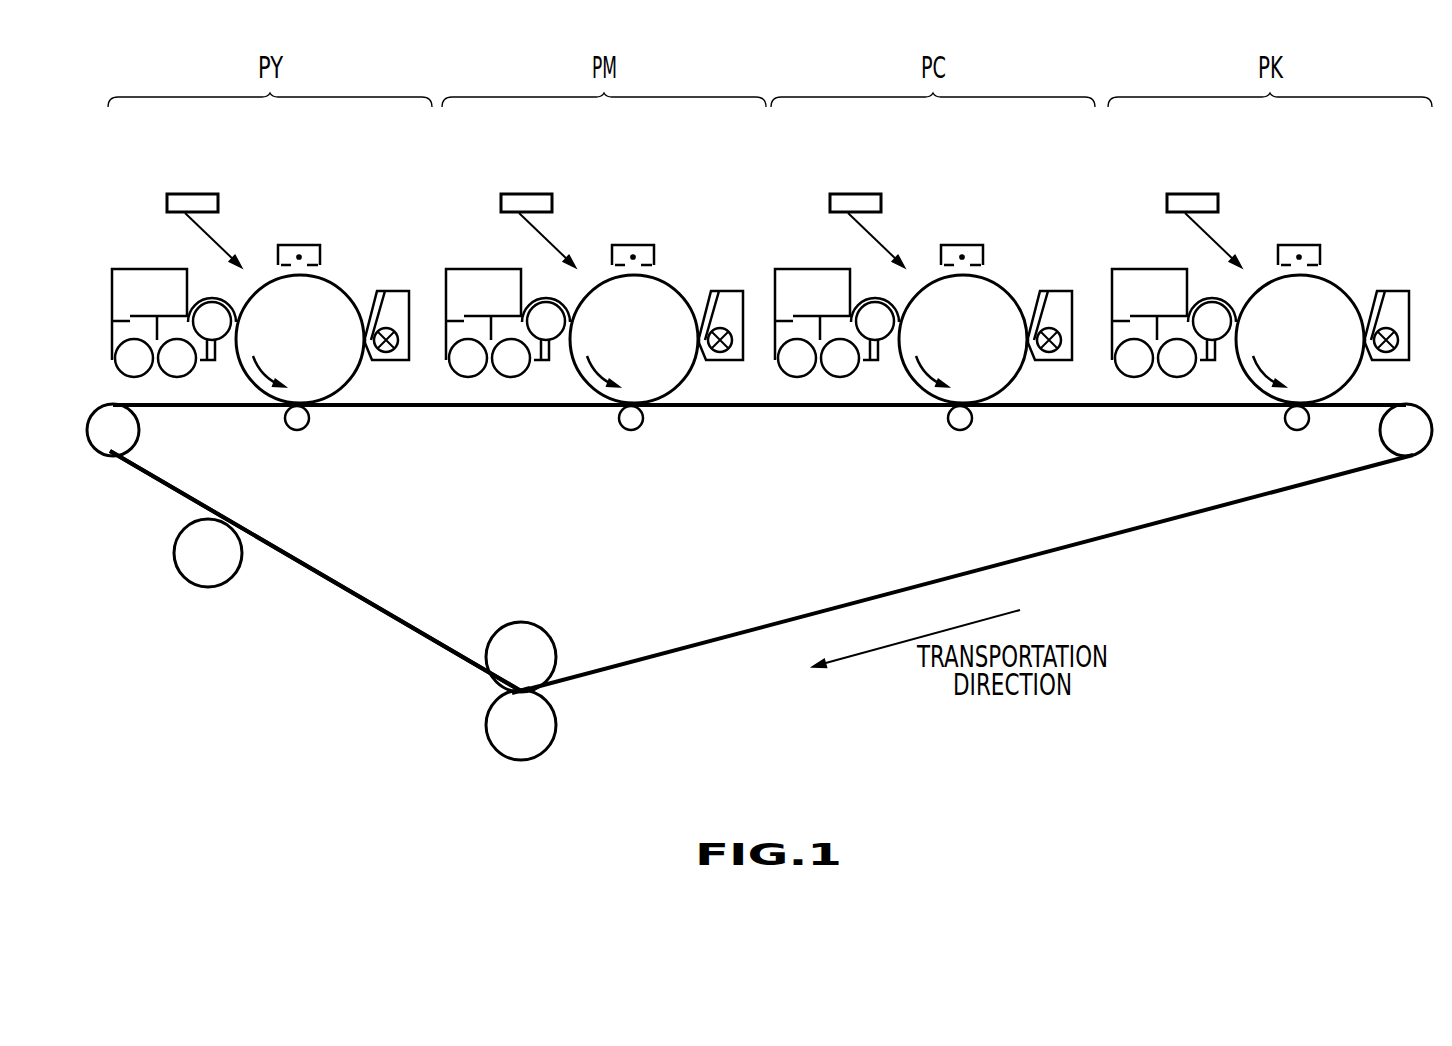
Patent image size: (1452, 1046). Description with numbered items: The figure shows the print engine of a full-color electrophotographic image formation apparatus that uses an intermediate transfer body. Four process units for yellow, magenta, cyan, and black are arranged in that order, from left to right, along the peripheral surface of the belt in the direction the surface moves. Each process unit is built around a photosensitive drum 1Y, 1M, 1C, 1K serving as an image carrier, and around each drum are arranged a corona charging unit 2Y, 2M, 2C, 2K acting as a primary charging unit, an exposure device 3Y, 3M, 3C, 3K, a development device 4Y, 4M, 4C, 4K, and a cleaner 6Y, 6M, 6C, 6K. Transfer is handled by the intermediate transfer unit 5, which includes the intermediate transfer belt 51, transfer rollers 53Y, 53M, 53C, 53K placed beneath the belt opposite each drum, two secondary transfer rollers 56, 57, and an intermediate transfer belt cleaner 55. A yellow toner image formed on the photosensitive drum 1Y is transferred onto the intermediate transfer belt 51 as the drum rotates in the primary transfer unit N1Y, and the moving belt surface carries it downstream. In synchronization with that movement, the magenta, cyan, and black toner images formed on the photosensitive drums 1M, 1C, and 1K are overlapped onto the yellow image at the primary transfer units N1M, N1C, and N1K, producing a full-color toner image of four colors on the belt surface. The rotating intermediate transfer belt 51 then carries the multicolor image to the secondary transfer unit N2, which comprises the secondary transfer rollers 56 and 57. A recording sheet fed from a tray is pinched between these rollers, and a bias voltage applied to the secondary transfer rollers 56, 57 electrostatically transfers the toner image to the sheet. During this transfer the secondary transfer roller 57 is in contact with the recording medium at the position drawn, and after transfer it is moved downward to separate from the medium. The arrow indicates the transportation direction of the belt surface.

The photosensitive drum 1Y is at (358, 375).
The photosensitive drum 1M is at (658, 339).
The photosensitive drum 1C is at (987, 339).
The photosensitive drum 1K is at (1325, 339).
The corona charging unit 2Y is at (293, 245).
The corona charging unit 2M is at (633, 222).
The corona charging unit 2C is at (962, 222).
The corona charging unit 2K is at (1299, 222).
The exposure device 3Y is at (182, 193).
The exposure device 3M is at (538, 198).
The exposure device 3C is at (867, 198).
The exposure device 3K is at (1204, 198).
The development device 4Y is at (132, 268).
The development device 4M is at (508, 281).
The development device 4C is at (837, 281).
The development device 4K is at (1174, 281).
The cleaner 6Y is at (377, 291).
The cleaner 6M is at (719, 291).
The cleaner 6C is at (1048, 291).
The cleaner 6K is at (1385, 291).
The transfer roller 53Y is at (298, 431).
The transfer roller 53M is at (632, 460).
The transfer roller 53C is at (961, 460).
The transfer roller 53K is at (1267, 449).
The primary transfer unit N1Y is at (308, 416).
The primary transfer unit N1M is at (660, 437).
The primary transfer unit N1C is at (989, 437).
The primary transfer unit N1K is at (1323, 437).
The intermediate transfer unit 5 is at (825, 572).
The intermediate transfer belt 51 is at (365, 609).
The intermediate transfer belt cleaner 55 is at (208, 588).
The secondary transfer roller 56 is at (521, 621).
The secondary transfer roller 57 is at (526, 761).
The secondary transfer unit N2 is at (521, 688).